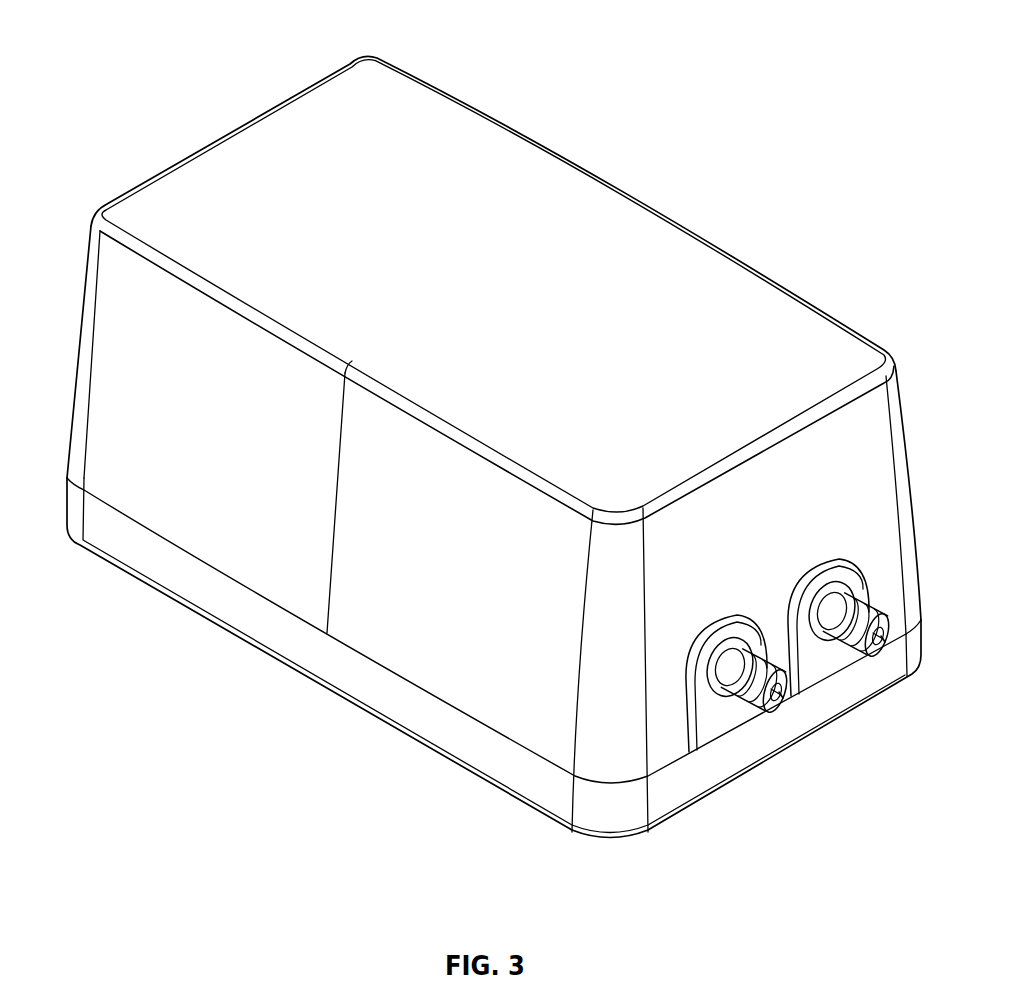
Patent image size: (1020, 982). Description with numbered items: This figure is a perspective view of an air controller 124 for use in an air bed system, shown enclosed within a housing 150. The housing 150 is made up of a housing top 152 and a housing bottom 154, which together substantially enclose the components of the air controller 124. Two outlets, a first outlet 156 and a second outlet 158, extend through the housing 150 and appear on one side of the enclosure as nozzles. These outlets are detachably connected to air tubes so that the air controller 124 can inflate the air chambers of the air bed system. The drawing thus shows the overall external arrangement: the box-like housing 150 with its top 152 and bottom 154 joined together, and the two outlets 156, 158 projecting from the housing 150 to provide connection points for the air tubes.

The air controller 124 is at (110, 45).
The housing 150 is at (150, 155).
The housing top 152 is at (127, 350).
The housing bottom 154 is at (153, 553).
The first outlet 156 is at (781, 703).
The second outlet 158 is at (880, 646).